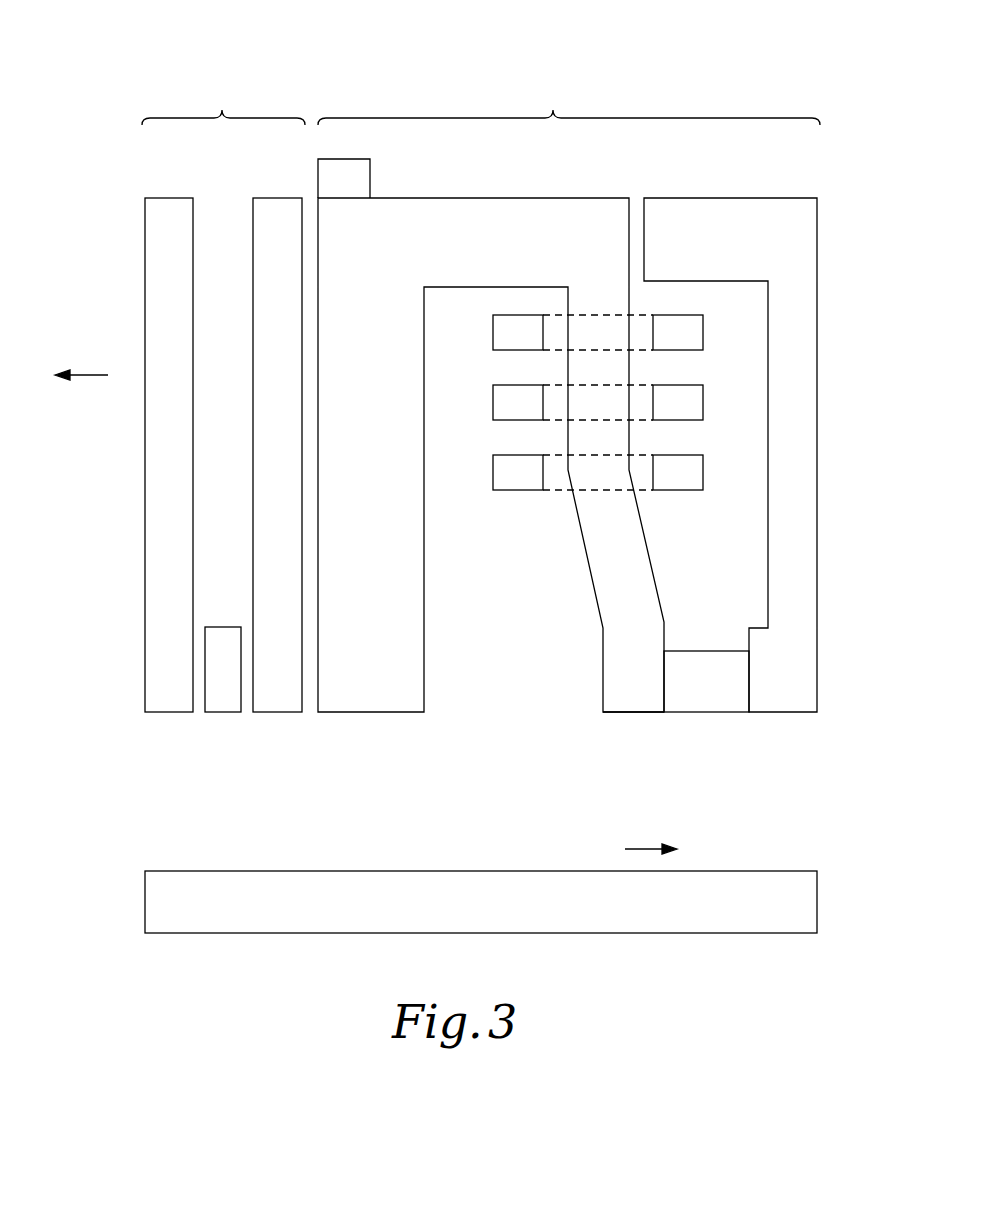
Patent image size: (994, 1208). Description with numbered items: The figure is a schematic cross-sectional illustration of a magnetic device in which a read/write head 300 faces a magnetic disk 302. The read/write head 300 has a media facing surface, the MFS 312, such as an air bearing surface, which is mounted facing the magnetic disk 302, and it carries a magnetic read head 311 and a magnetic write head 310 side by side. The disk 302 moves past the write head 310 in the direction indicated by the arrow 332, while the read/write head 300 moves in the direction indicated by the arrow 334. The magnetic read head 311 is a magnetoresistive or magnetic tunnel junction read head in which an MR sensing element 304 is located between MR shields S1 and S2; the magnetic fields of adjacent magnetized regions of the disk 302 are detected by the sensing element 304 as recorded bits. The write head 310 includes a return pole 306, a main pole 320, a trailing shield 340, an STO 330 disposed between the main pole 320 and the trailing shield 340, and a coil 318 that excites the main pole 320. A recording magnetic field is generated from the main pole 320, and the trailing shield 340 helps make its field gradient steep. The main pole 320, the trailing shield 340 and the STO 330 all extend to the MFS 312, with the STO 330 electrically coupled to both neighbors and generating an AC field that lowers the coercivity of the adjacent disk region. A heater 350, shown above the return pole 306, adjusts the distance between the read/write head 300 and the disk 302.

The read/write head 300 is at (136, 36).
The magnetic read head 311 is at (223, 101).
The magnetic write head 310 is at (569, 101).
The MR shield S1 is at (165, 712).
The MR shield S2 is at (258, 712).
The MR sensing element 304 is at (216, 712).
The return pole 306 is at (348, 712).
The heater 350 is at (365, 176).
The trailing shield 340 is at (818, 680).
The STO 330 is at (683, 697).
The MFS 312 is at (627, 712).
The main pole 320 is at (612, 661).
The coil 318 is at (519, 490).
The arrow 334 is at (90, 373).
The arrow 332 is at (639, 847).
The magnetic disk 302 is at (818, 893).